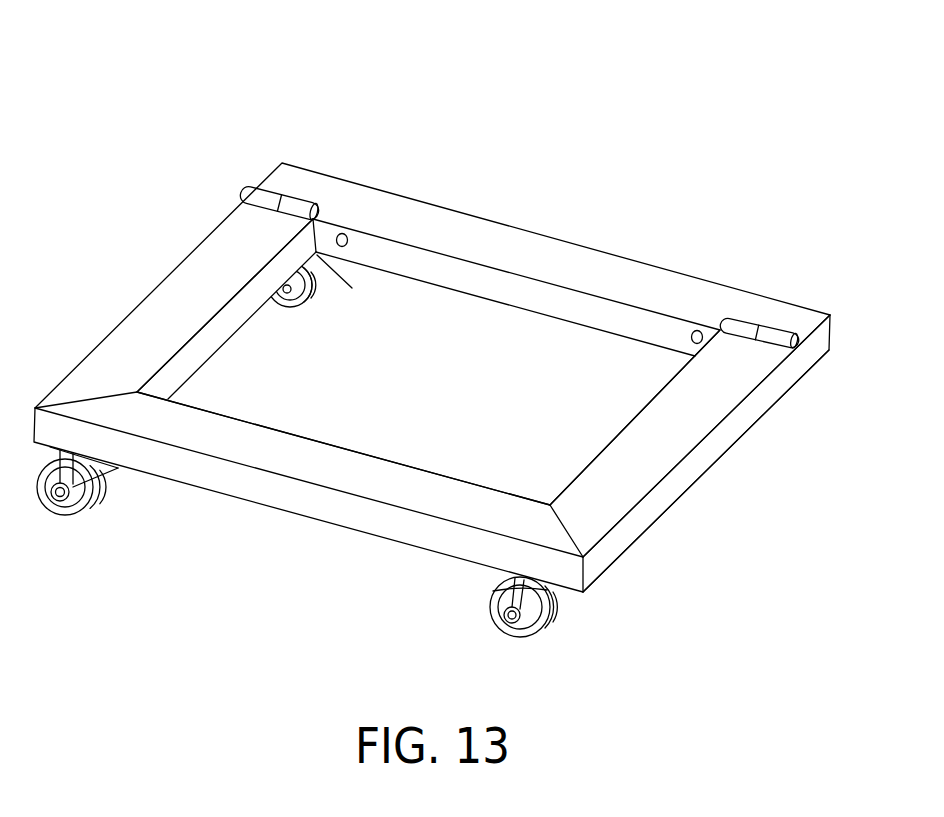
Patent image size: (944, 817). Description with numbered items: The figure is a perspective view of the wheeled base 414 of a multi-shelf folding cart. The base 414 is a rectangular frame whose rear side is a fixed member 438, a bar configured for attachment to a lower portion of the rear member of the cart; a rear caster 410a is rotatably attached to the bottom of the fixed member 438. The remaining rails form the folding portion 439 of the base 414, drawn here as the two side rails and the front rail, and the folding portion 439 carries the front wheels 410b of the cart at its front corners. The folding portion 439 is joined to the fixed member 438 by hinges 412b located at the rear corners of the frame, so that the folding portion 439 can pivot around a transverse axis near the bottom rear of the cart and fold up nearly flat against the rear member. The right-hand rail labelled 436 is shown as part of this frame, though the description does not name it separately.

The base 414 is at (411, 117).
The fixed member 438 is at (553, 252).
The folding portion 439 is at (172, 305).
The right rail 436 is at (803, 320).
The hinges 412b is at (768, 337).
The rear caster 410a is at (320, 278).
The front wheels 410b is at (487, 602).